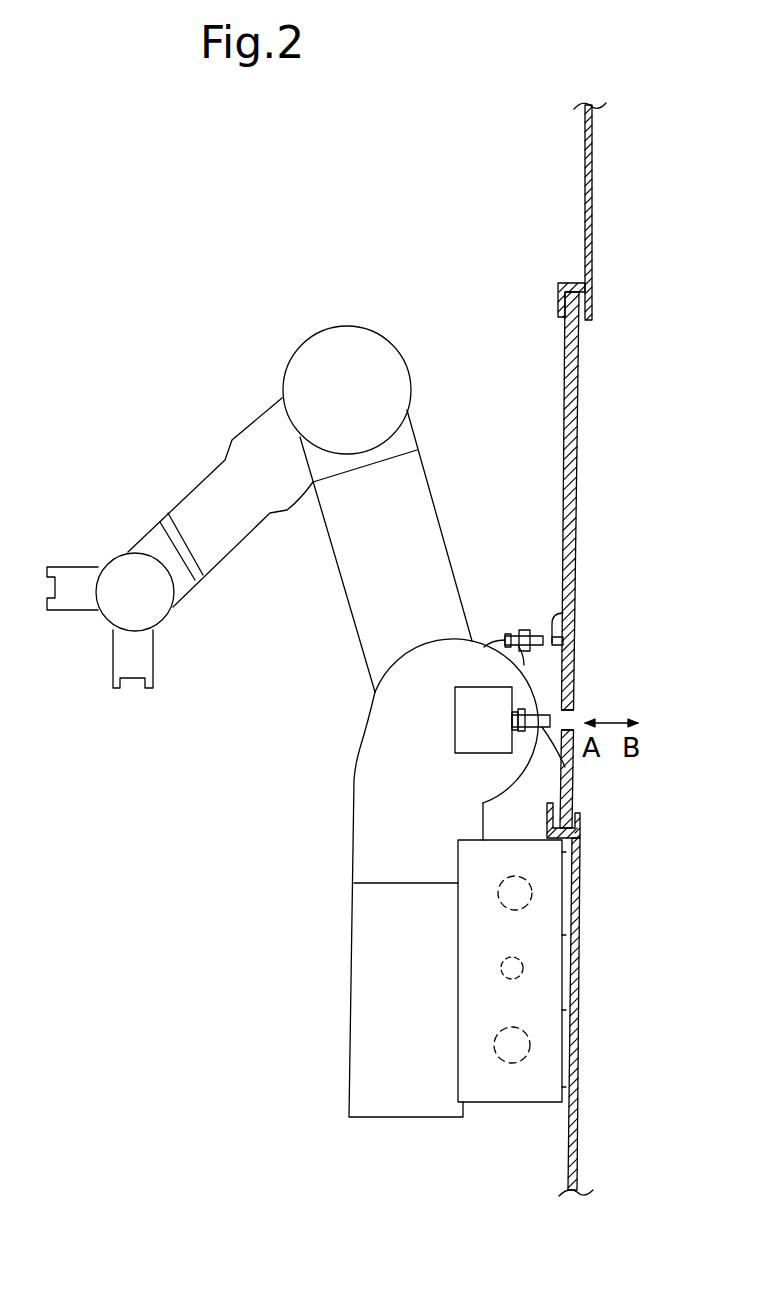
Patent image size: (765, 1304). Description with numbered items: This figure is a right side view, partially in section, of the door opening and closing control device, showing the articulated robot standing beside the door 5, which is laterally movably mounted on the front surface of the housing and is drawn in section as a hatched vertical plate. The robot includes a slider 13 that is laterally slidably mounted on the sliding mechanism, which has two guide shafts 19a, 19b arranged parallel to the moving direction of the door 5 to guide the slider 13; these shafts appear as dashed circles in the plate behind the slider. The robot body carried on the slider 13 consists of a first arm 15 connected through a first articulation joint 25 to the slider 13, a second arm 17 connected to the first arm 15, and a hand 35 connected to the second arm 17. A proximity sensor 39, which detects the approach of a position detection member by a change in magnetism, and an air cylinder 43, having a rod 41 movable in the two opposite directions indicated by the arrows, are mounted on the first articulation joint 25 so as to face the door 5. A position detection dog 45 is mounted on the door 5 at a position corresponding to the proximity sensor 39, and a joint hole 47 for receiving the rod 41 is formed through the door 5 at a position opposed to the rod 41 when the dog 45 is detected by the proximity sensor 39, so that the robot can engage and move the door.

The door 5 is at (577, 454).
The slider 13 is at (365, 915).
The first arm 15 is at (420, 525).
The second arm 17 is at (190, 502).
The guide shaft 19a is at (515, 893).
The guide shaft 19b is at (512, 1045).
The first articulation joint 25 is at (383, 722).
The hand 35 is at (65, 615).
The proximity sensor 39 is at (540, 636).
The rod 41 is at (565, 767).
The air cylinder 43 is at (470, 740).
The position detection dog 45 is at (565, 613).
The joint hole 47 is at (574, 714).